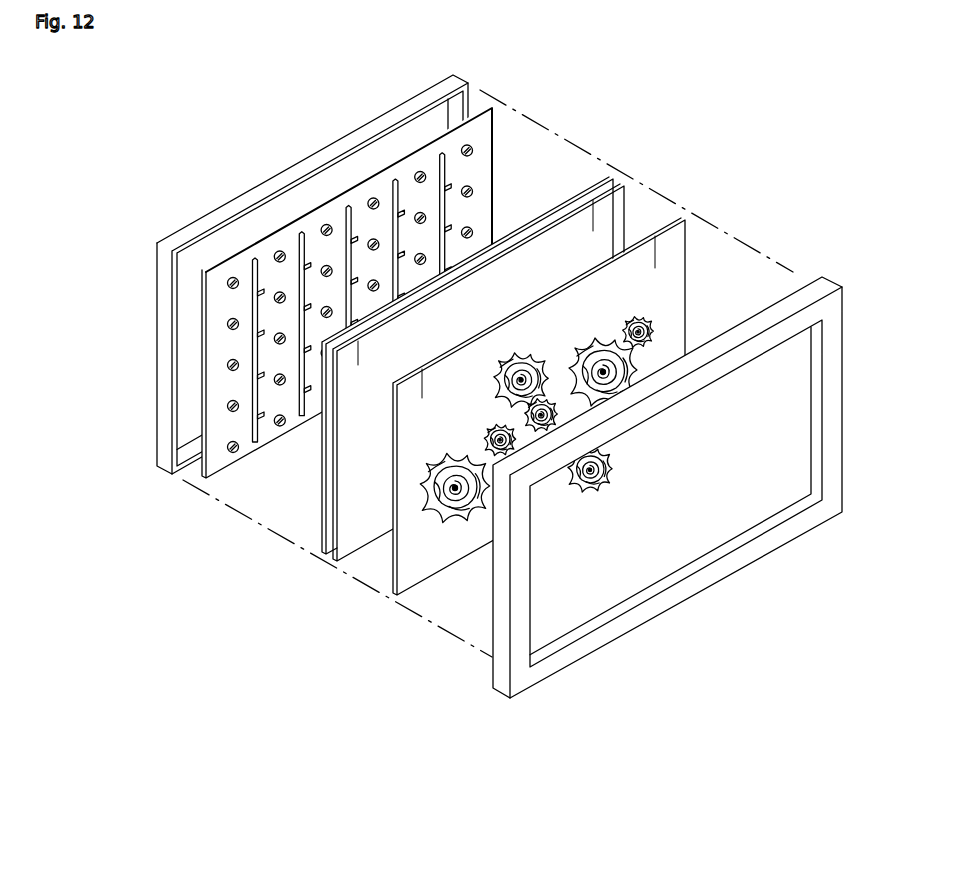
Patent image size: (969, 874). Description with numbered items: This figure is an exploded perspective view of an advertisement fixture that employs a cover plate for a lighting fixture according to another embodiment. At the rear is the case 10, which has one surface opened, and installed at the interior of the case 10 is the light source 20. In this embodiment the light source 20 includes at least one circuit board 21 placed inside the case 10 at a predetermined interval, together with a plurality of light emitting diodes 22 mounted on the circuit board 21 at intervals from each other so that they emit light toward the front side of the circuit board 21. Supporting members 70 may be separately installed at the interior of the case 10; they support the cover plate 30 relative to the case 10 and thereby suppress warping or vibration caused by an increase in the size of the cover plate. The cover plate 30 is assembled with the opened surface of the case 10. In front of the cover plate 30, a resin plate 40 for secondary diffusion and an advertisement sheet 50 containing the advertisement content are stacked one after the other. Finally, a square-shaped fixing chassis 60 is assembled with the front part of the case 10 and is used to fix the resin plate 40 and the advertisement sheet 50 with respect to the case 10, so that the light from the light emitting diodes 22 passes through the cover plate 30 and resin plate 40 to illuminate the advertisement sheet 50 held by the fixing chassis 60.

The case 10 is at (163, 410).
The light source 20 is at (343, 344).
The circuit board 21 is at (213, 471).
The light emitting diodes 22 is at (280, 425).
The cover plate 30 is at (324, 531).
The resin plate for secondary diffusion 40 is at (358, 538).
The advertisement sheet 50 is at (685, 287).
The fixing chassis 60 is at (843, 323).
The supporting members 70 is at (305, 231).